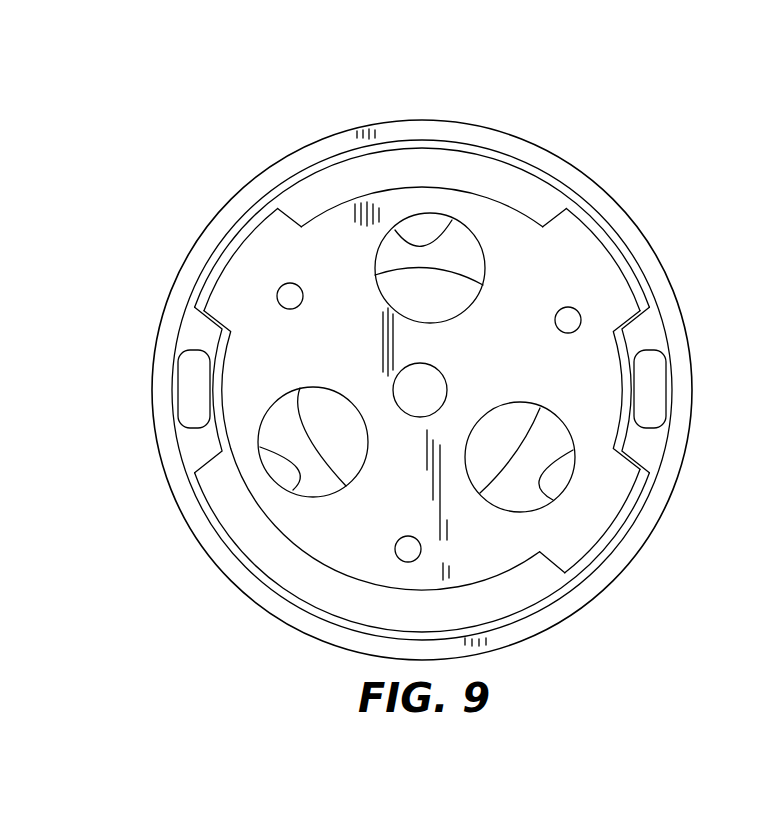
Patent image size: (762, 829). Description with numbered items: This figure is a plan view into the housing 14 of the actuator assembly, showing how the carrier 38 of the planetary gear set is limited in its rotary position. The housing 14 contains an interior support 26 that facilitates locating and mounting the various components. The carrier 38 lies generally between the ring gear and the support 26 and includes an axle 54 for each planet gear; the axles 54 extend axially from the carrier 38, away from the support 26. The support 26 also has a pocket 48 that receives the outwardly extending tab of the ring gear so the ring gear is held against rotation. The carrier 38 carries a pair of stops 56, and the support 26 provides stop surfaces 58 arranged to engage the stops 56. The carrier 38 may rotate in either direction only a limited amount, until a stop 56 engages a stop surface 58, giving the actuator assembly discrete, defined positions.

The housing 14 is at (556, 148).
The interior support 26 is at (575, 240).
The carrier 38 is at (588, 372).
The pocket 48 is at (188, 386).
The axle 54 is at (292, 293).
The stop 56 is at (262, 253).
The stop surface 58 is at (202, 332).